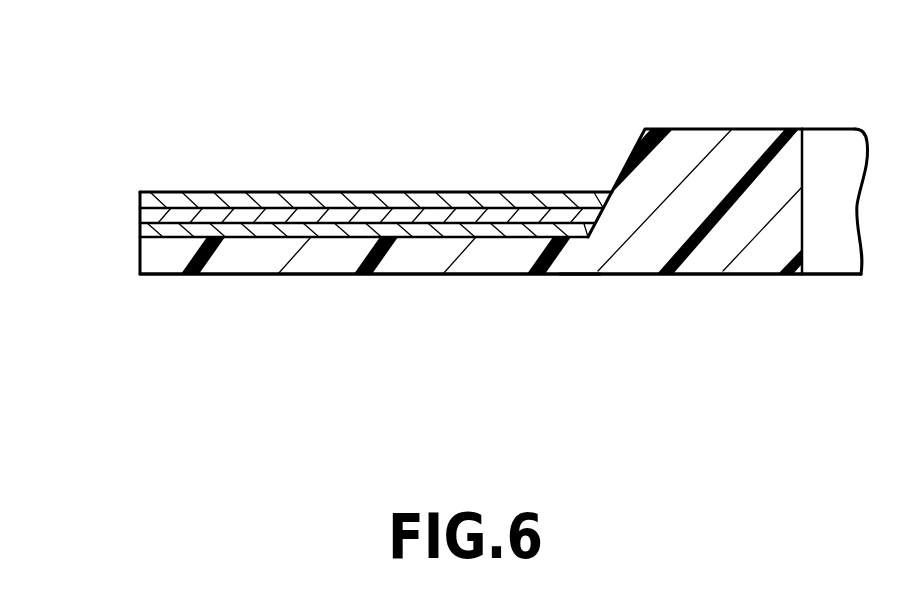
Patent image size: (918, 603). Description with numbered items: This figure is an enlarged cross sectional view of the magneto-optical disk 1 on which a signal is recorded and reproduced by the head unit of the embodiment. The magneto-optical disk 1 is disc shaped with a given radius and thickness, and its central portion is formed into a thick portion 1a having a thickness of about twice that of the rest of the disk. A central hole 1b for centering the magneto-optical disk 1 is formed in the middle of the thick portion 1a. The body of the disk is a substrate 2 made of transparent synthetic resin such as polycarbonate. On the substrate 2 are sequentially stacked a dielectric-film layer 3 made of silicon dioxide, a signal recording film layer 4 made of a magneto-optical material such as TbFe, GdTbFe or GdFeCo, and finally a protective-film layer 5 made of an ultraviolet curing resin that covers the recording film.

The magneto-optical disk 1 is at (240, 133).
The thick portion 1a is at (708, 147).
The central hole 1b is at (828, 153).
The substrate 2 is at (157, 257).
The dielectric-film layer 3 is at (160, 230).
The signal recording film layer 4 is at (157, 215).
The protective-film layer 5 is at (170, 197).